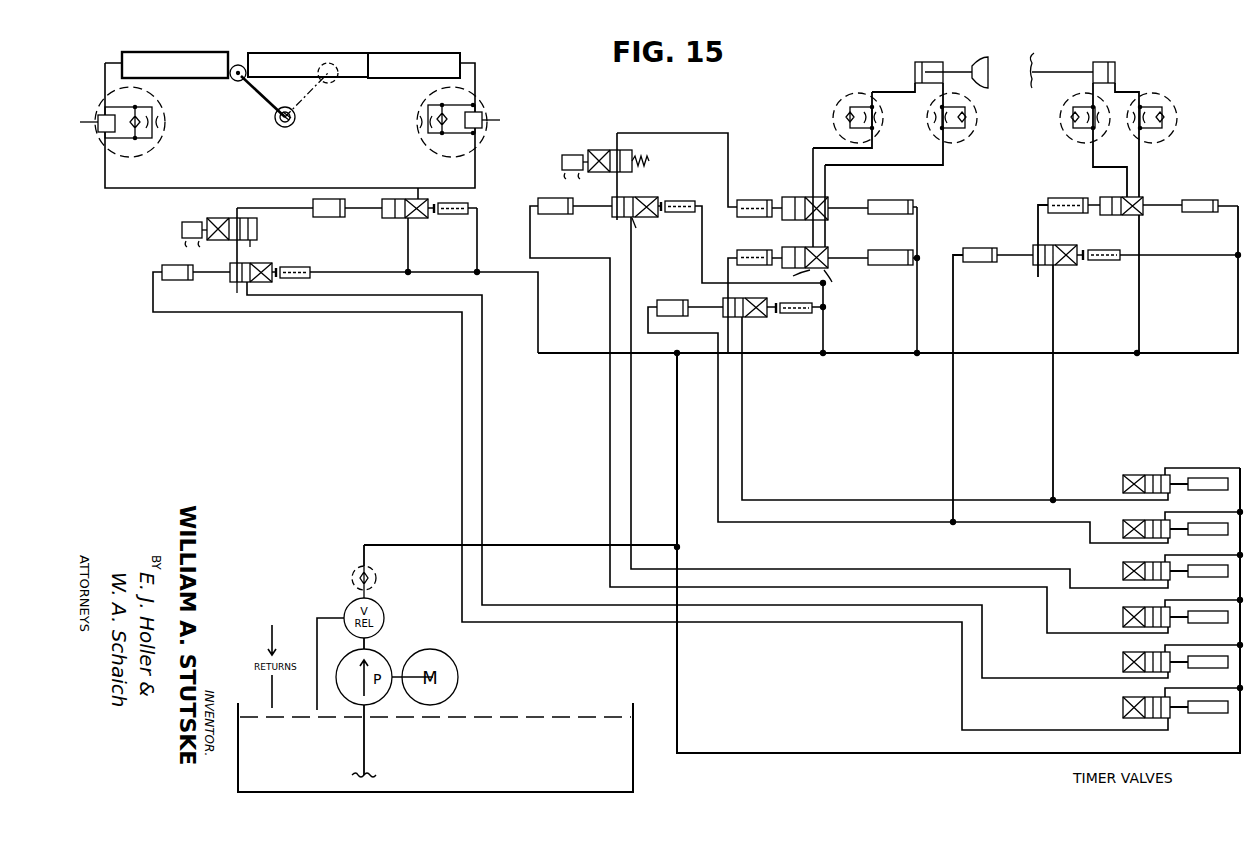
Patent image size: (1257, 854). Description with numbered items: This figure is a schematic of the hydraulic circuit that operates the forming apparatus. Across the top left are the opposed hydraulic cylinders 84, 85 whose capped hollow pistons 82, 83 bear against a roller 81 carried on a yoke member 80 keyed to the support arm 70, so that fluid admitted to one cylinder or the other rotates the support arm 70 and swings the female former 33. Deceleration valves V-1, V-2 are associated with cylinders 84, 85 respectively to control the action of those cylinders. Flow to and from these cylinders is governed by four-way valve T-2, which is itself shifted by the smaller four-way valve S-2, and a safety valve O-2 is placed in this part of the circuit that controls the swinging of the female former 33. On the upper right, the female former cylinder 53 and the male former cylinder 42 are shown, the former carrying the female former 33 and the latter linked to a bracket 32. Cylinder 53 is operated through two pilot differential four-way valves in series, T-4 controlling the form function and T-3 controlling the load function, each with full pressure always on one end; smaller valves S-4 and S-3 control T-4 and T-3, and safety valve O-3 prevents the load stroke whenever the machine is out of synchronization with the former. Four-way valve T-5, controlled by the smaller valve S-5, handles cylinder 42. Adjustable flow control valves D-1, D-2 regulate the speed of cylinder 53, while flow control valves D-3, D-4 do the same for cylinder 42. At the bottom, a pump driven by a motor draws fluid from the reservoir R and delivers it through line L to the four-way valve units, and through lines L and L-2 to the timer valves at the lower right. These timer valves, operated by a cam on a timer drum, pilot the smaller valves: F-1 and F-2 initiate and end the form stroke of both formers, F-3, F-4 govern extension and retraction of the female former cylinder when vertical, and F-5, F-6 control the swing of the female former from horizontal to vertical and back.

The hydraulic cylinder 84 is at (166, 58).
The hollow piston 82 is at (236, 64).
The hollow piston 83 is at (318, 40).
The hydraulic cylinder 85 is at (410, 57).
The roller 81 is at (232, 78).
The yoke member 80 is at (256, 93).
The support arm 70 is at (278, 124).
The deceleration valve V-1 is at (136, 145).
The deceleration valve V-2 is at (476, 130).
The safety valve O-2 is at (230, 218).
The four-way valve T-2 is at (384, 217).
The smaller four-way valve S-2 is at (263, 264).
The safety valve O-3 is at (633, 152).
The smaller four-way valve S-3 is at (656, 197).
The four-way valve T-3 is at (828, 198).
The four-way valve T-4 is at (828, 268).
The smaller four-way valve S-4 is at (763, 317).
The adjustable flow control valve D-1 is at (858, 95).
The adjustable flow control valve D-2 is at (968, 112).
The flow control valve D-3 is at (1076, 138).
The flow control valve D-4 is at (1166, 138).
The female former cylinder 53 is at (928, 61).
The female former 33 is at (981, 59).
The bracket 32 is at (1038, 54).
The male former cylinder 42 is at (1106, 61).
The four-way valve T-5 is at (1102, 197).
The smaller four-way valve S-5 is at (1066, 246).
The timer pilot valve F-1 is at (1123, 520).
The timer pilot valve F-2 is at (1123, 475).
The timer valve F-3 is at (1123, 607).
The timer valve F-4 is at (1123, 562).
The timer valve F-5 is at (1123, 697).
The timer valve F-6 is at (1123, 652).
The line L is at (410, 545).
The line L-2 is at (824, 747).
The reservoir R is at (540, 724).